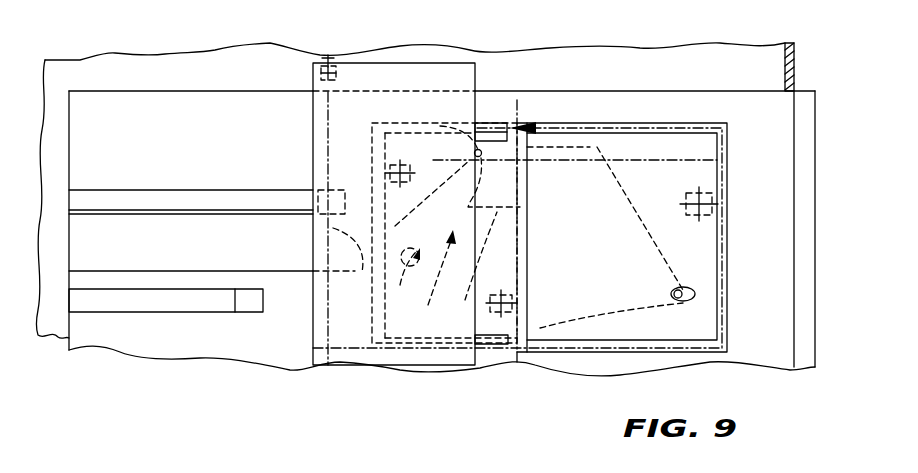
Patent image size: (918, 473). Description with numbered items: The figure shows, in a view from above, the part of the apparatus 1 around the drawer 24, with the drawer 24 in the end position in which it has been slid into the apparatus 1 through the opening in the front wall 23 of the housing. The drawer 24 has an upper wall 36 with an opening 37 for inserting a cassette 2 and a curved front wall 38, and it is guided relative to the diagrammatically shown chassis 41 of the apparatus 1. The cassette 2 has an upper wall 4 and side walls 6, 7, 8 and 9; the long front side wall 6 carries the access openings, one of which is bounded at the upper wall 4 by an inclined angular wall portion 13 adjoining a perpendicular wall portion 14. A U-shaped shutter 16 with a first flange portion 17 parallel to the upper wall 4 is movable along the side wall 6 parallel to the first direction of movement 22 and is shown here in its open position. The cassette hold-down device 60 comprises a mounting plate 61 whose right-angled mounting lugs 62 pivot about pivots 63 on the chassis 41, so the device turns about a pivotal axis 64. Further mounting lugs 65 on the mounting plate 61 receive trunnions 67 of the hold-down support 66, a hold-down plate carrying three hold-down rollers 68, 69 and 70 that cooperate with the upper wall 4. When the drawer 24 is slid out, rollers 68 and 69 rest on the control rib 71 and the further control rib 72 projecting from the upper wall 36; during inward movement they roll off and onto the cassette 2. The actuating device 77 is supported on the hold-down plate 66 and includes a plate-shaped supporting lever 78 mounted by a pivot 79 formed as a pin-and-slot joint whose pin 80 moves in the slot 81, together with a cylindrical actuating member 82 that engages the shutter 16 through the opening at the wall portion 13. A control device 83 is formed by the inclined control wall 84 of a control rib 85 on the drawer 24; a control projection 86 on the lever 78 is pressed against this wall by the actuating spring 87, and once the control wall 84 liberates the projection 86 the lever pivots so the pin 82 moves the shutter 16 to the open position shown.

The apparatus 1 is at (836, 90).
The cassette 2 is at (734, 248).
The upper wall 4 is at (722, 280).
The side wall 6 is at (716, 126).
The side wall 7 is at (374, 318).
The side wall 8 is at (700, 352).
The side wall 9 is at (727, 173).
The angular wall portion 13 is at (452, 124).
The wall portion 14 is at (432, 193).
The shutter 16 is at (638, 168).
The first flange portion 17 is at (644, 135).
The first direction of movement 22 is at (588, 168).
The front wall 23 is at (796, 50).
The drawer 24 is at (824, 176).
The upper wall 36 is at (130, 102).
The opening 37 is at (723, 150).
The front wall 38 is at (812, 260).
The chassis 41 is at (58, 40).
The cassette hold-down device 60 is at (305, 110).
The mounting plate 61 is at (322, 350).
The mounting lugs 62 is at (338, 70).
The pivots 63 is at (326, 58).
The pivotal axis 64 is at (322, 168).
The further mounting lugs 65 is at (532, 125).
The hold-down support 66 is at (602, 140).
The trunnions 67 is at (517, 125).
The hold-down roller 68 is at (718, 205).
The hold-down roller 69 is at (488, 311).
The hold-down roller 70 is at (338, 220).
The control rib 71 is at (119, 194).
The further control rib 72 is at (148, 312).
The actuating device 77 is at (437, 336).
The supporting lever 78 is at (611, 324).
The pivot 79 is at (699, 308).
The pin 80 is at (675, 292).
The slot 81 is at (688, 287).
The actuating member 82 is at (481, 162).
The control device 83 is at (362, 177).
The control wall 84 is at (260, 214).
The control rib 85 is at (262, 258).
The control projection 86 is at (405, 281).
The actuating spring 87 is at (462, 258).